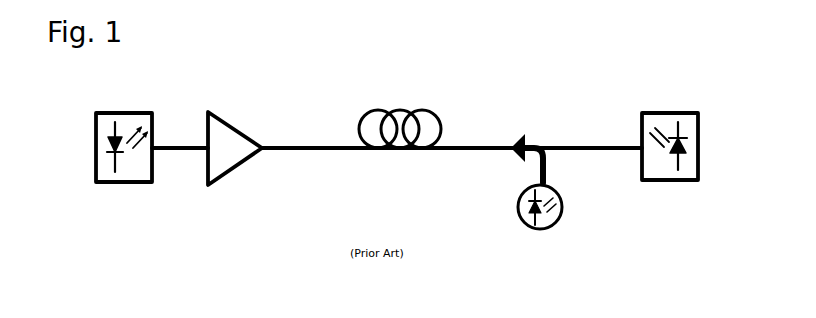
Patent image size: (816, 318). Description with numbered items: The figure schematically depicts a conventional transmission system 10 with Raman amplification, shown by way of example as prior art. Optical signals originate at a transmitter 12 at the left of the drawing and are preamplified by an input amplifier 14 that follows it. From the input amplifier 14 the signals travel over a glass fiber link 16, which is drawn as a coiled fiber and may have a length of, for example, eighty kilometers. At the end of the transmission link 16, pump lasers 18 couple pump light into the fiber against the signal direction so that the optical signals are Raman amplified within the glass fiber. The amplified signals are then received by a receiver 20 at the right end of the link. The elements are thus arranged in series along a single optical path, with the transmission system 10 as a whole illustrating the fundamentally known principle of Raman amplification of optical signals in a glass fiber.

The transmission system 10 is at (492, 70).
The transmitter 12 is at (118, 183).
The input amplifier 14 is at (229, 172).
The glass fiber link 16 is at (400, 153).
The pump lasers 18 is at (562, 208).
The receiver 20 is at (670, 181).